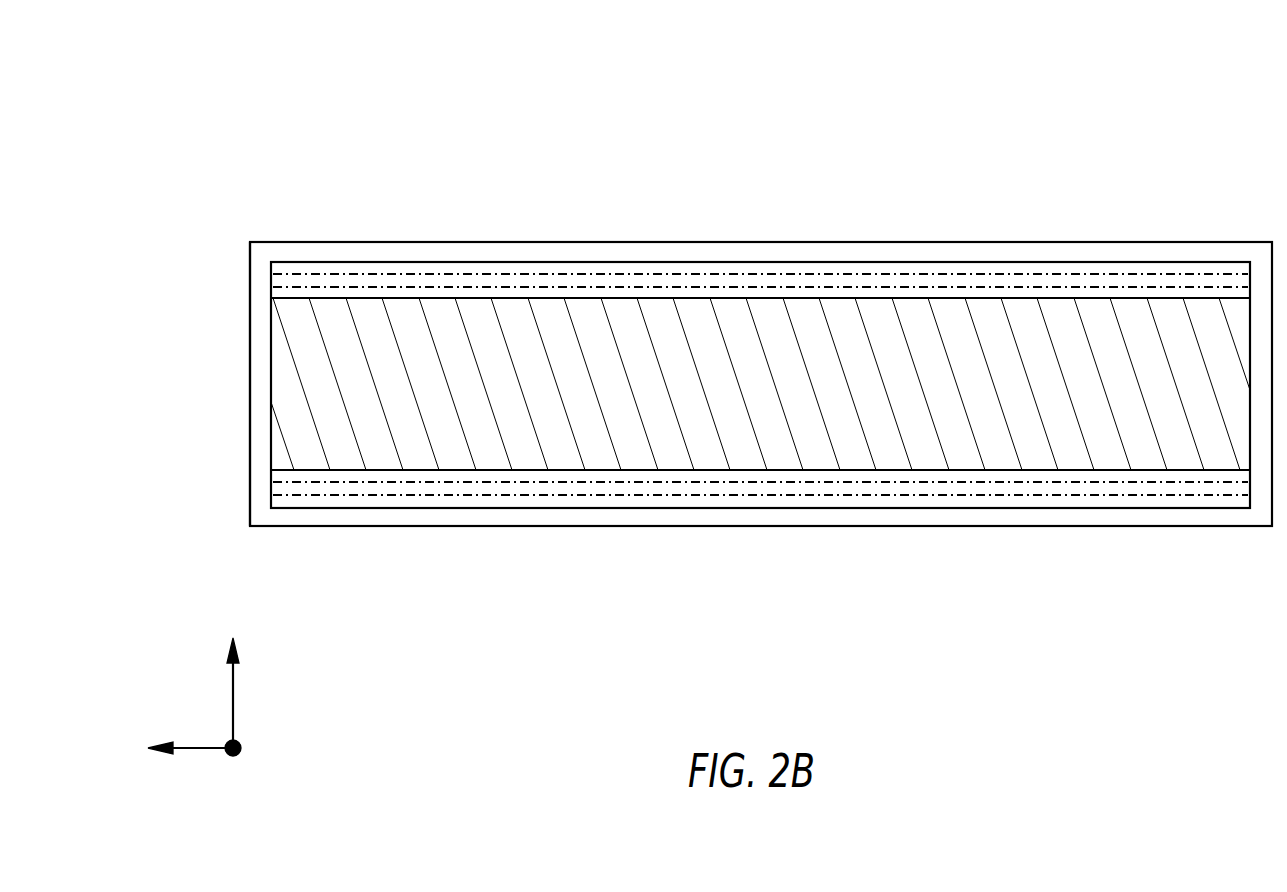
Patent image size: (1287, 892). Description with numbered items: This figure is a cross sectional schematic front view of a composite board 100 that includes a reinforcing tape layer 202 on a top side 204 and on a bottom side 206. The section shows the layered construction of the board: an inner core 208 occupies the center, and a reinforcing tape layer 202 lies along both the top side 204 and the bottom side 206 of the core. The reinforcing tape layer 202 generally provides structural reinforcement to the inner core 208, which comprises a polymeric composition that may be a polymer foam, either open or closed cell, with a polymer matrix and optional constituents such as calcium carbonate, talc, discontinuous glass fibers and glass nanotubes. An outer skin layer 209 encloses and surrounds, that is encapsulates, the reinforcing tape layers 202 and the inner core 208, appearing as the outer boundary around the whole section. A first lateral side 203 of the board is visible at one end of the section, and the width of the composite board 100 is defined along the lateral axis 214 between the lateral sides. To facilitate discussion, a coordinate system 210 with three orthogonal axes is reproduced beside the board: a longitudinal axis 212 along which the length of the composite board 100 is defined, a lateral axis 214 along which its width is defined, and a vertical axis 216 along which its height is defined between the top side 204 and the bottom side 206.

The composite board 100 is at (1122, 118).
The reinforcing tape layer 202 is at (1160, 277).
The first lateral side 203 is at (248, 383).
The top side 204 is at (933, 240).
The bottom side 206 is at (848, 532).
The inner core 208 is at (590, 413).
The outer skin layer 209 is at (428, 247).
The coordinate system 210 is at (221, 691).
The longitudinal axis 212 is at (241, 747).
The lateral axis 214 is at (198, 752).
The vertical axis 216 is at (236, 680).